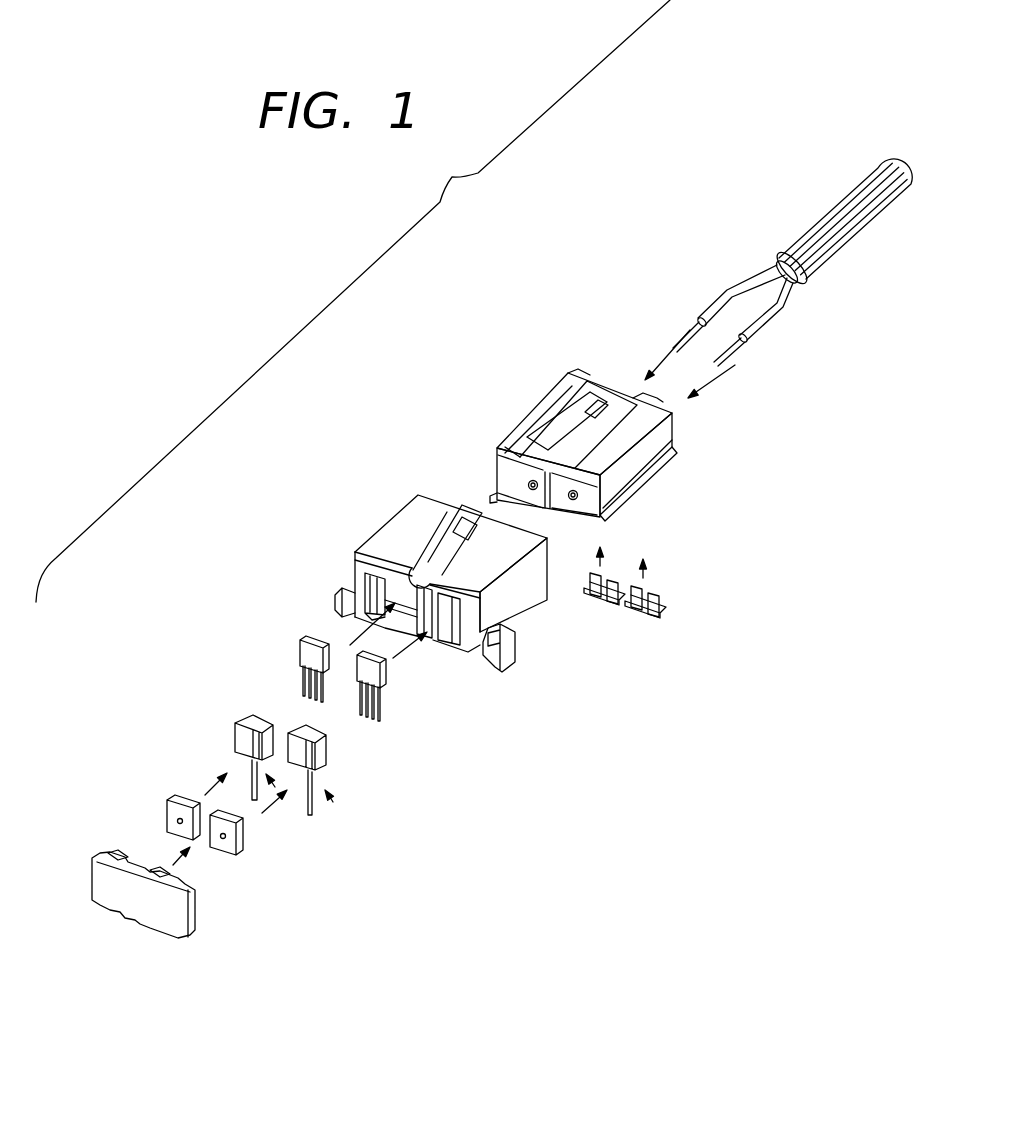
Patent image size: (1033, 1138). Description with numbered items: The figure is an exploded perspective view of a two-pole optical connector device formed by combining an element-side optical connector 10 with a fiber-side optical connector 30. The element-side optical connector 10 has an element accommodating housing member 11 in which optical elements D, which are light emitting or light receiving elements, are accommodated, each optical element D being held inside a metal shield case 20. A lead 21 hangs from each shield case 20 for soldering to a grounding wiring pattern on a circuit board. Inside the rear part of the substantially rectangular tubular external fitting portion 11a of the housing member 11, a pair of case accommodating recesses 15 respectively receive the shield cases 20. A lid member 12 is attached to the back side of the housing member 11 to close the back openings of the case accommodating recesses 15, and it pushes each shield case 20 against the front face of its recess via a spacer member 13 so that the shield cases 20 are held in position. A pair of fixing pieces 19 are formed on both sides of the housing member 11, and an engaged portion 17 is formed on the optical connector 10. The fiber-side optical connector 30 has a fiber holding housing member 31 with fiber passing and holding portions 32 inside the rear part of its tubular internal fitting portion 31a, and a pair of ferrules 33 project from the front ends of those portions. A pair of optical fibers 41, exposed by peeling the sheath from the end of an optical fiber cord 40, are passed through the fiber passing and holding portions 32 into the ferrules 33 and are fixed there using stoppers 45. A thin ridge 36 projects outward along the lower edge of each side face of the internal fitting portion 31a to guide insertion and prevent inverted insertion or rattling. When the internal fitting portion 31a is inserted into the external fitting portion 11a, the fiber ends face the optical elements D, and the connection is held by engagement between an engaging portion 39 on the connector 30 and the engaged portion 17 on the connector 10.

The element-side optical connector 10 is at (332, 510).
The element accommodating housing member 11 is at (376, 528).
The tubular external fitting portion 11a is at (421, 492).
The lid member 12 is at (190, 930).
The spacer member 13 is at (196, 838).
The case accommodating recess 15 is at (410, 593).
The engaged portion 17 is at (467, 528).
The fixing piece 19 is at (338, 612).
The metal shield case 20 is at (236, 731).
The lead 21 is at (262, 768).
The fiber-side optical connector 30 is at (527, 365).
The fiber holding housing member 31 is at (535, 404).
The tubular internal fitting portion 31a is at (513, 437).
The fiber passing and holding portion 32 is at (667, 440).
The ferrule 33 is at (573, 503).
The ridge 36 is at (490, 489).
The engaging portion 39 is at (597, 393).
The optical fiber cord 40 is at (800, 240).
The optical fiber 41 is at (683, 335).
The stopper 45 is at (632, 612).
The optical element D is at (320, 638).